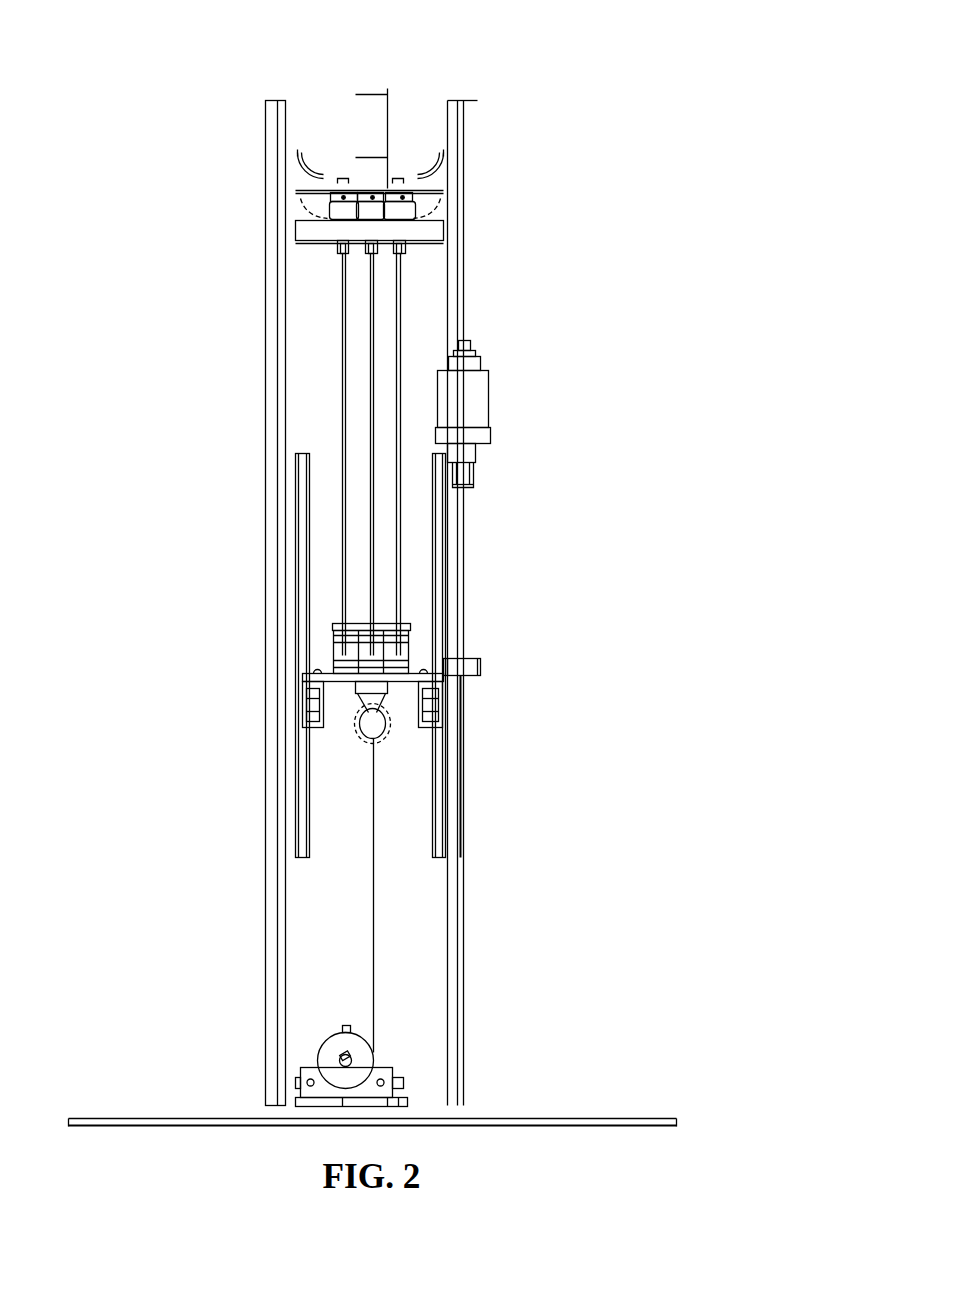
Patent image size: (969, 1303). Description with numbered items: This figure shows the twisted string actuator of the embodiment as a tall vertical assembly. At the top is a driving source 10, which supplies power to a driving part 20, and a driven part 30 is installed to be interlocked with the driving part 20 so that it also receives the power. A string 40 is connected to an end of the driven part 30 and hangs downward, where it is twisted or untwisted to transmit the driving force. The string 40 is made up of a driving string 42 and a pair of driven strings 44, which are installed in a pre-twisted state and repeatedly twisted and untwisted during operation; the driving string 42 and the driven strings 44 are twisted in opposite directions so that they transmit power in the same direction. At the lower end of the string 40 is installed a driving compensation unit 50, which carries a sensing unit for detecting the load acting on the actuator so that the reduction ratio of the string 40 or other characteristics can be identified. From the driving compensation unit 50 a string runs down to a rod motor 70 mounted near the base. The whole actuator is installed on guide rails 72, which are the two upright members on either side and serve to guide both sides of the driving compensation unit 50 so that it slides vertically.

The driving source 10 is at (375, 107).
The driving part 20 is at (375, 207).
The driven part 30 is at (333, 210).
The string 40 is at (361, 455).
The driving string 42 is at (372, 543).
The driven string 44 is at (400, 315).
The driving compensation unit 50 is at (418, 642).
The rod motor 70 is at (318, 1048).
The guide rail 72 is at (265, 963).